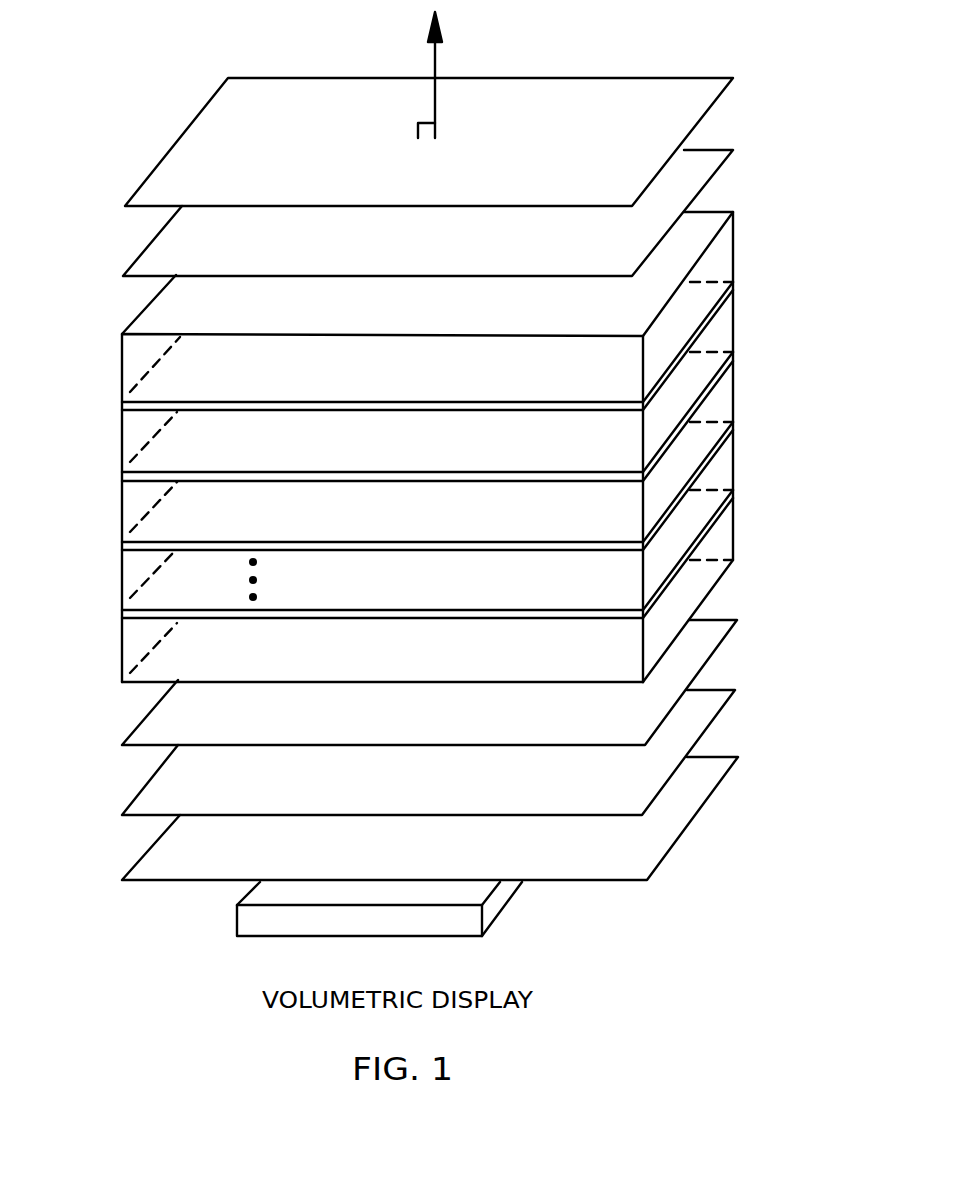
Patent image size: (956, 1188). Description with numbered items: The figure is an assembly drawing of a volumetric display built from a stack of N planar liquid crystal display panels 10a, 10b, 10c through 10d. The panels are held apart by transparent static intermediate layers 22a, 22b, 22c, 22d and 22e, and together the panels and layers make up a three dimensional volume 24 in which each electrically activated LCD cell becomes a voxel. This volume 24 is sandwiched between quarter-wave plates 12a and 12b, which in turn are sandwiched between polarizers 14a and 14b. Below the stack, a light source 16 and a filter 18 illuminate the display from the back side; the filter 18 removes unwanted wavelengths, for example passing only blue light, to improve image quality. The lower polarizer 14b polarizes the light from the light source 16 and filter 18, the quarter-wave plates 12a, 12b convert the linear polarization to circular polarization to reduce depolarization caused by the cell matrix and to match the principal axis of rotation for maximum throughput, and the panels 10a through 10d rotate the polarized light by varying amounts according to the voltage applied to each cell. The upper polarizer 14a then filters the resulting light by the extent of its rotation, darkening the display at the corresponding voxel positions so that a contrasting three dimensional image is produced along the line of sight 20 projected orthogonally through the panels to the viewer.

The liquid crystal display panel 10a is at (735, 280).
The liquid crystal display panel 10b is at (735, 352).
The liquid crystal display panel 10c is at (735, 420).
The liquid crystal display panel 10d is at (735, 484).
The quarter-wave plate 12a is at (735, 151).
The quarter-wave plate 12b is at (739, 620).
The polarizer 14a is at (735, 80).
The polarizer 14b is at (737, 692).
The light source 16 is at (237, 924).
The filter 18 is at (740, 757).
The line of sight 20 is at (437, 50).
The static intermediate layer 22a is at (735, 248).
The static intermediate layer 22b is at (735, 318).
The static intermediate layer 22c is at (735, 388).
The static intermediate layer 22d is at (735, 452).
The static intermediate layer 22e is at (735, 520).
The 3D volume 24 is at (113, 333).